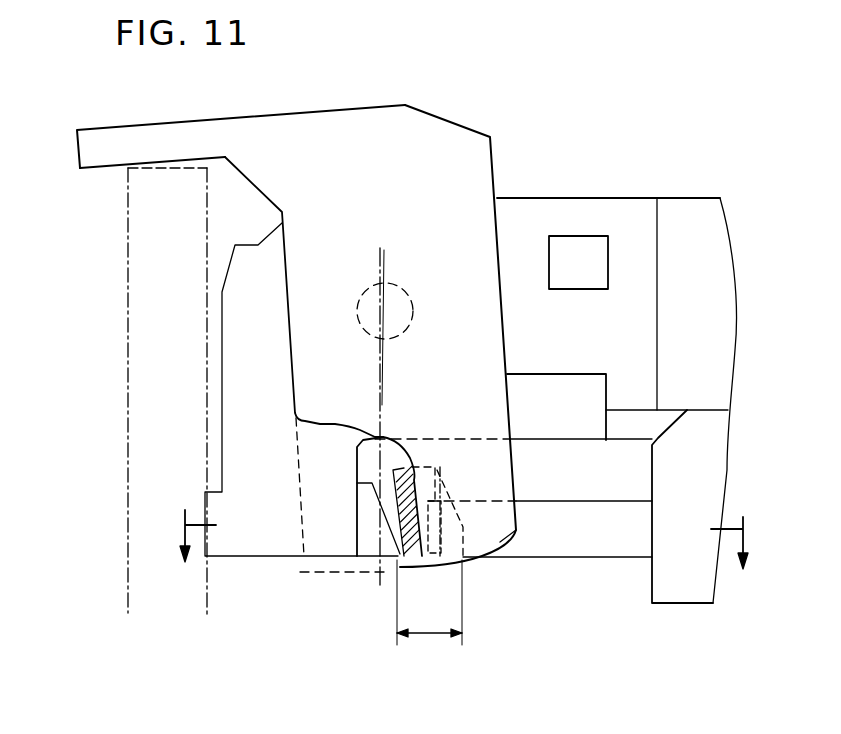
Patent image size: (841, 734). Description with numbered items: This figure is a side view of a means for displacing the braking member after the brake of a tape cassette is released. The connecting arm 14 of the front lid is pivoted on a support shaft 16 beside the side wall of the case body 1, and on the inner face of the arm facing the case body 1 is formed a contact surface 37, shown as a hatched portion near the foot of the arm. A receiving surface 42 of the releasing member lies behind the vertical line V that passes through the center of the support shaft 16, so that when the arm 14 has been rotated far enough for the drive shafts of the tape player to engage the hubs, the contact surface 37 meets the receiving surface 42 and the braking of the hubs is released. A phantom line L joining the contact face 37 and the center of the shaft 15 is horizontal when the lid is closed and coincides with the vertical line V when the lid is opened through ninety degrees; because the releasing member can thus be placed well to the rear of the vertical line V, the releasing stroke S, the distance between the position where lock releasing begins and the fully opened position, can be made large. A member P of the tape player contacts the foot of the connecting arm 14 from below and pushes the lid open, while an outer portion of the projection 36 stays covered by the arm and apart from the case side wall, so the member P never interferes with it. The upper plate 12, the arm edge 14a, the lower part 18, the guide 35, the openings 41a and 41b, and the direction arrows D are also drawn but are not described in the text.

The case body 1 is at (693, 198).
The cover plate 12 is at (349, 124).
The connecting arm 14 is at (468, 153).
The arm edge 14a is at (293, 391).
The shaft 15 is at (360, 290).
The support shaft 16 is at (574, 207).
The base 18 is at (685, 588).
The guide member 35 is at (607, 480).
The projection 36 is at (363, 520).
The contact surface 37 is at (390, 470).
The upper aperture 41a is at (596, 246).
The lower aperture 41b is at (573, 380).
The receiving surface 42 is at (420, 560).
The member of the tape player P is at (128, 390).
The phantom line L is at (388, 370).
The releasing stroke S is at (429, 602).
The vertical line V is at (378, 527).
The direction D is at (460, 531).